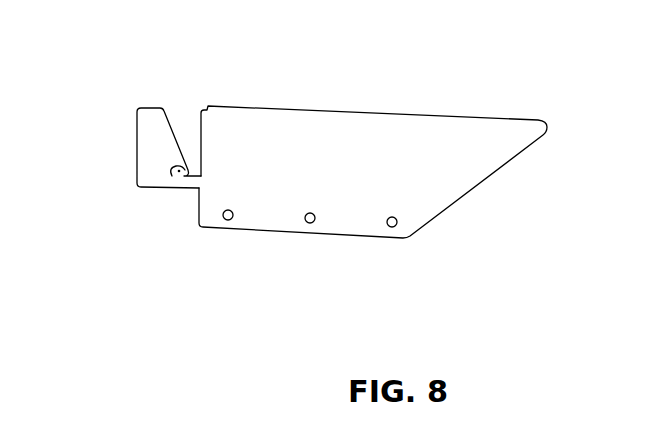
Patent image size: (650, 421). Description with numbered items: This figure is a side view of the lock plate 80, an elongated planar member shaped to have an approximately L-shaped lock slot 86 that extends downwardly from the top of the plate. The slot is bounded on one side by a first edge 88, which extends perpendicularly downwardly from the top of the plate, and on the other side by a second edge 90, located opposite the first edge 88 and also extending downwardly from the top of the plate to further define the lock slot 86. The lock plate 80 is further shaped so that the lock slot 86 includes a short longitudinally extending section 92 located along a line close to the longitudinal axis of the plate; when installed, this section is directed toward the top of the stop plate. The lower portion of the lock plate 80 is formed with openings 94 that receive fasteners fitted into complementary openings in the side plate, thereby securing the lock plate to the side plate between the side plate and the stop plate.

The lock plate 80 is at (88, 61).
The lock slot 86 is at (186, 121).
The first edge 88 is at (198, 142).
The second edge 90 is at (182, 139).
The longitudinally extending section 92 is at (172, 188).
The openings 94 is at (230, 220).